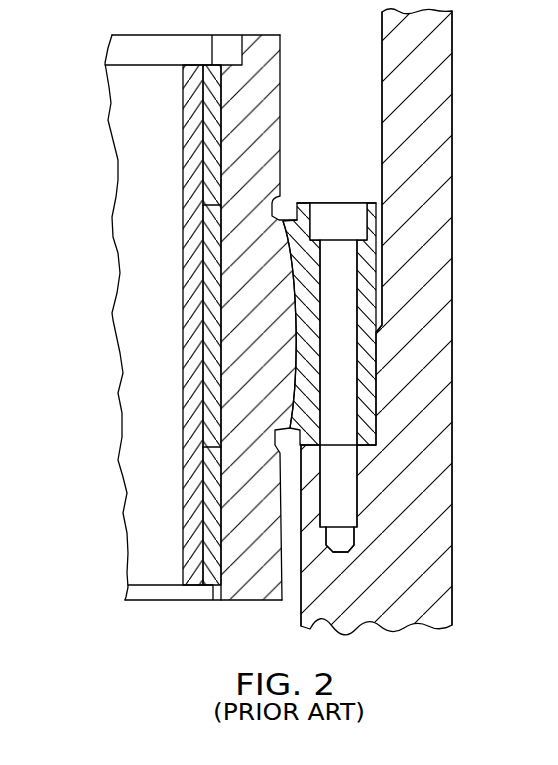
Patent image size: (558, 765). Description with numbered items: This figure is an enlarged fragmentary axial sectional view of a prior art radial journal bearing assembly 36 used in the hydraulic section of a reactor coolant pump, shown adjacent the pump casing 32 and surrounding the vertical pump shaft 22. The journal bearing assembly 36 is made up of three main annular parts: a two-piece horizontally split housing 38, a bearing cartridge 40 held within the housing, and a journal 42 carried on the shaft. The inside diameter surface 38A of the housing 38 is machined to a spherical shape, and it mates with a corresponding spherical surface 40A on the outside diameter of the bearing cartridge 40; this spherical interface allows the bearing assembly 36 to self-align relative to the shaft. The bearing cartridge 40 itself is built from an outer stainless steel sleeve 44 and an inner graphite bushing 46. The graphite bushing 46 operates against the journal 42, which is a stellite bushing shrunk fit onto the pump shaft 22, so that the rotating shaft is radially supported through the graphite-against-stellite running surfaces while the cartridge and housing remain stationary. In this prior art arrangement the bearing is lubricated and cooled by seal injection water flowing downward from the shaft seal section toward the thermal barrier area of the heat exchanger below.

The pump shaft 22 is at (165, 430).
The pump casing 32 is at (442, 237).
The journal bearing assembly 36 is at (465, 165).
The housing 38 is at (370, 371).
The inside diameter surface 38A is at (287, 393).
The bearing cartridge 40 is at (292, 164).
The spherical surface 40A is at (300, 312).
The journal 42 is at (192, 477).
The outer stainless steel sleeve 44 is at (267, 546).
The inner graphite bushing 46 is at (205, 352).